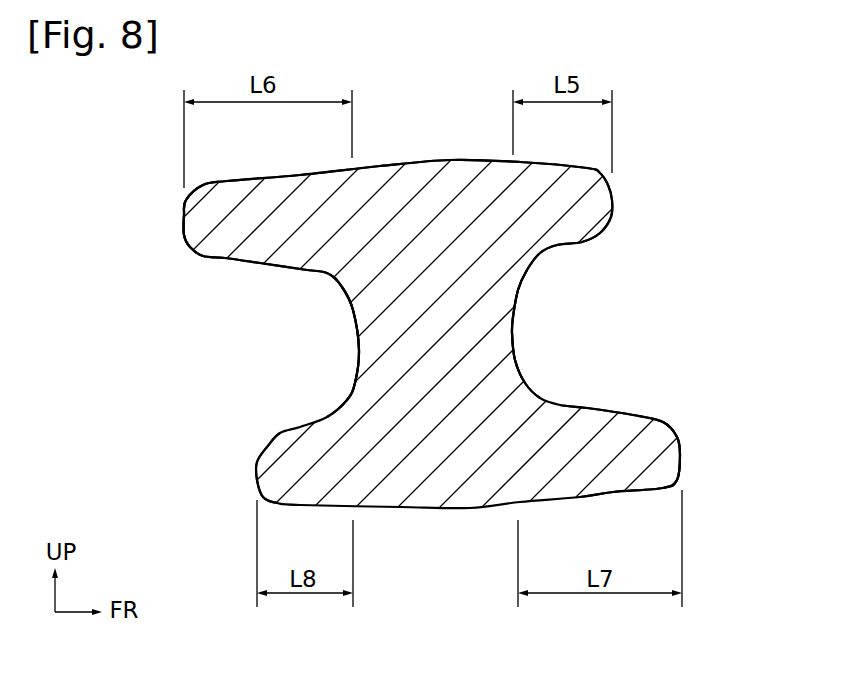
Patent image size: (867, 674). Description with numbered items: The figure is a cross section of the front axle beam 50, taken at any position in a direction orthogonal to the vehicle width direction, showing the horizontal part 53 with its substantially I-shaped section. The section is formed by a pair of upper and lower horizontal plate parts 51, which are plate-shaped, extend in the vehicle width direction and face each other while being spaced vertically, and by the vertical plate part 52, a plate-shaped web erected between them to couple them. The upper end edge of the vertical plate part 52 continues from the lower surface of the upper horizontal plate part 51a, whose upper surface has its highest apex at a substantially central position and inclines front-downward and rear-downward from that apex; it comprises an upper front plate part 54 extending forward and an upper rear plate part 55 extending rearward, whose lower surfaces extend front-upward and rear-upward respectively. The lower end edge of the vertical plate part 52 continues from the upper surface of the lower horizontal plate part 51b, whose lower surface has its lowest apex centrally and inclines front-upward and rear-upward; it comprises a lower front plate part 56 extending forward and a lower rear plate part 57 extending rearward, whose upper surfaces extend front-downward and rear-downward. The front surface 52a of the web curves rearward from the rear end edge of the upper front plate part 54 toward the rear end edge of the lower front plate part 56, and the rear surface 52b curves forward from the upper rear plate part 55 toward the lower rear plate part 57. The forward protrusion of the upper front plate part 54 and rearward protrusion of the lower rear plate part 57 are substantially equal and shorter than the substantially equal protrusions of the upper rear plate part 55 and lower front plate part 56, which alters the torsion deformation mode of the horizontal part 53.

The front axle beam 50 is at (426, 518).
The horizontal plate parts 51 is at (435, 336).
The upper horizontal plate part 51a is at (252, 263).
The lower horizontal plate part 51b is at (606, 407).
The vertical plate part 52 is at (515, 295).
The front surface 52a is at (515, 350).
The rear surface 52b is at (358, 350).
The horizontal part 53 is at (449, 158).
The upper front plate part 54 is at (612, 210).
The upper rear plate part 55 is at (183, 233).
The lower front plate part 56 is at (683, 460).
The lower rear plate part 57 is at (256, 486).